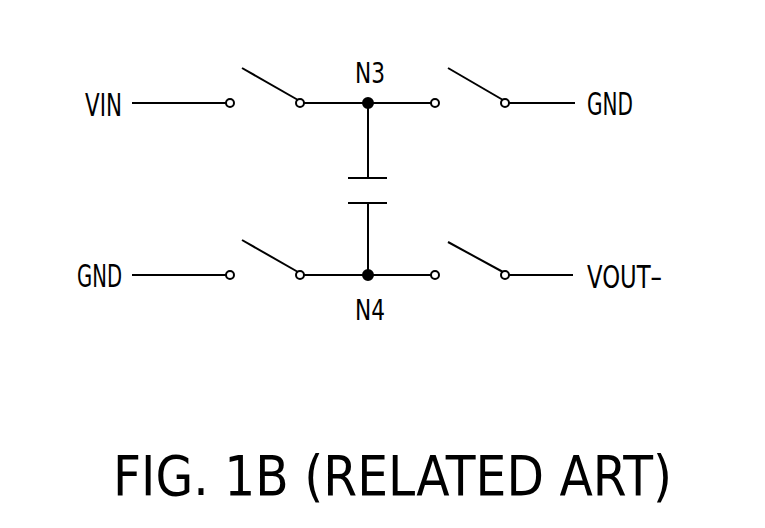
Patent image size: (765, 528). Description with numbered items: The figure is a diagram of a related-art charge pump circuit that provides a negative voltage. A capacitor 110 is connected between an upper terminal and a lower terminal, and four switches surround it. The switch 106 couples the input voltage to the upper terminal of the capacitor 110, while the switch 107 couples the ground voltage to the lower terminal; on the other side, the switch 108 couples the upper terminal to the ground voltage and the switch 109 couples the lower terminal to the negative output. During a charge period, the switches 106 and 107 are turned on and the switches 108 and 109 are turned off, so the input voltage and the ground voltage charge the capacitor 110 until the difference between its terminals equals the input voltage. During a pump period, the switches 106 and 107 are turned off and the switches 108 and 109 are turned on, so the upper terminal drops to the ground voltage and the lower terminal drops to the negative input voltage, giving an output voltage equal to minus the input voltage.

The switch 106 is at (258, 112).
The switch 107 is at (258, 282).
The switch 108 is at (473, 118).
The switch 109 is at (463, 287).
The capacitor 110 is at (385, 193).